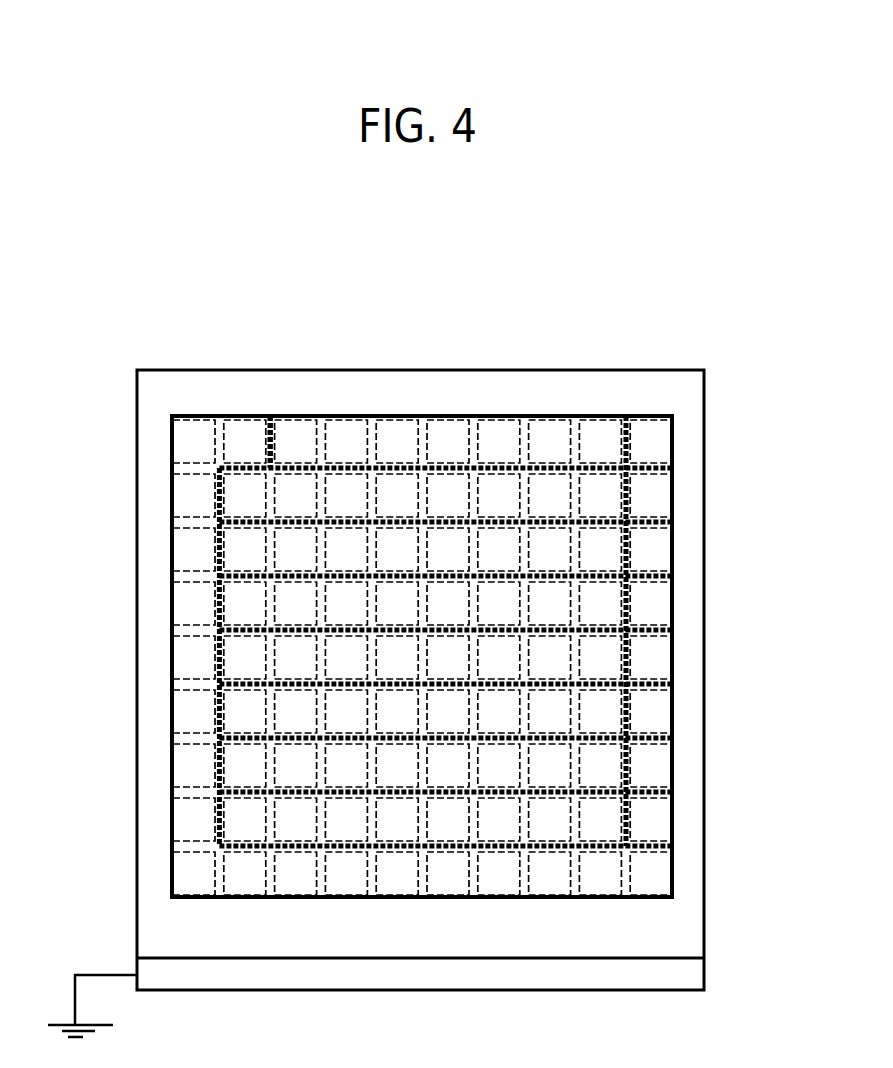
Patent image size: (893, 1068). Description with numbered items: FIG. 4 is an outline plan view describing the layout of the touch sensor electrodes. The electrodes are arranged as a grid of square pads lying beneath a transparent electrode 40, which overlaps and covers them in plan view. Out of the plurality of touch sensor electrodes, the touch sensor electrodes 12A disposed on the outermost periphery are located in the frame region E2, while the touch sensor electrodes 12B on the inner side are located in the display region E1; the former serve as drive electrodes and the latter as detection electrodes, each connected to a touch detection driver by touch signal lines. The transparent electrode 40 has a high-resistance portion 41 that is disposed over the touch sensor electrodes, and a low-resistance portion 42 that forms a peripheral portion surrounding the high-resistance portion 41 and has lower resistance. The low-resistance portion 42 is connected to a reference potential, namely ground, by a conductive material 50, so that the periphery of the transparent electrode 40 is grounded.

The touch sensor electrodes 12A is at (186, 441).
The touch sensor electrodes 12B is at (607, 484).
The transparent electrode 40 is at (681, 369).
The high-resistance portion 41 is at (373, 416).
The low-resistance portion 42 is at (433, 393).
The conductive material 50 is at (697, 977).
The display region E1 is at (272, 468).
The frame region E2 is at (327, 405).